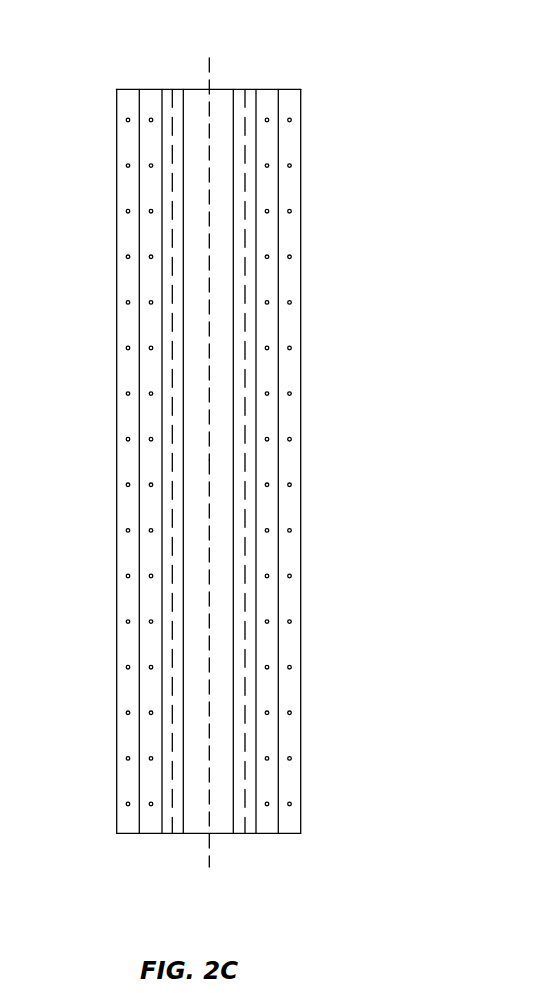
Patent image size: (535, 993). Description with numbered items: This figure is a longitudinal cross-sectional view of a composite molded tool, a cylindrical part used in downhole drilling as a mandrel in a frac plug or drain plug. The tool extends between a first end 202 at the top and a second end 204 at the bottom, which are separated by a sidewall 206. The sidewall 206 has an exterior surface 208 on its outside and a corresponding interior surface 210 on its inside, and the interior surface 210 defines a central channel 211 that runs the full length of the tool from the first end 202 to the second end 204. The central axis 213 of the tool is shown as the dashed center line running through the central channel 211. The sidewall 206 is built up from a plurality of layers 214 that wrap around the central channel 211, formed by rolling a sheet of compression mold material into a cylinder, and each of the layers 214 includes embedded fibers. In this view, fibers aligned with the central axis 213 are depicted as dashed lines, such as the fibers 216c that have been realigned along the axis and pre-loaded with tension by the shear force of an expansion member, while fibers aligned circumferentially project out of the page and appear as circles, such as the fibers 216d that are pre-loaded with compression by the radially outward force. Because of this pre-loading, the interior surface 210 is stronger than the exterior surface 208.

The first end 202 is at (189, 52).
The second end 204 is at (151, 847).
The sidewall 206 is at (114, 239).
The exterior surface 208 is at (117, 363).
The interior surface 210 is at (233, 822).
The central channel 211 is at (210, 131).
The central axis 213 is at (210, 862).
The layers 214 is at (245, 373).
The fibers pre-loaded with tension 216c is at (172, 703).
The fibers pre-loaded with compression 216d is at (126, 575).